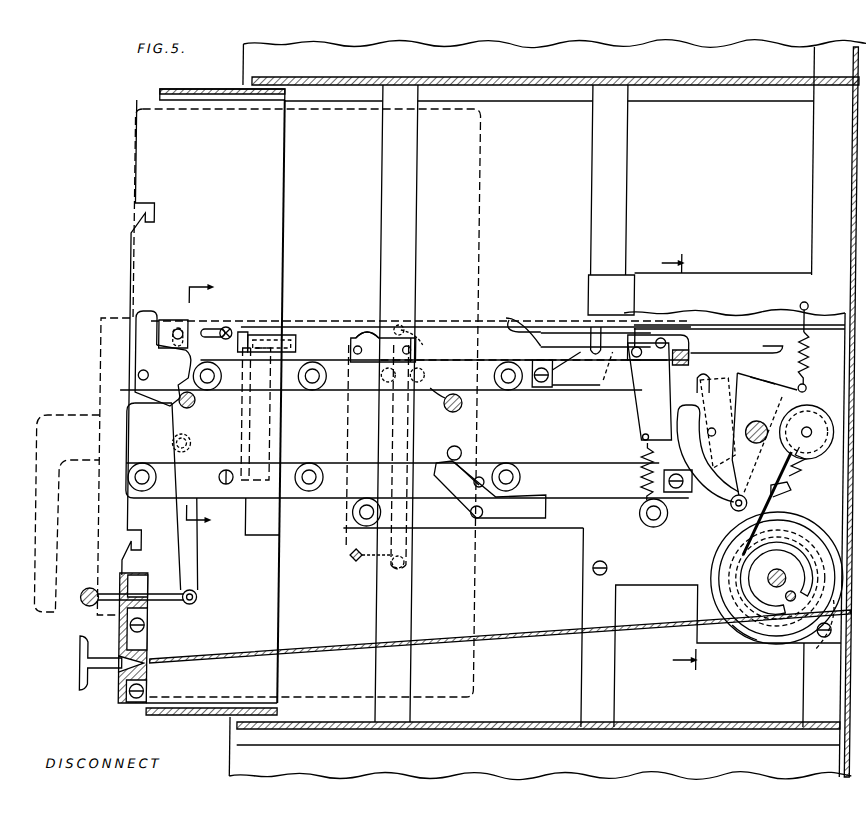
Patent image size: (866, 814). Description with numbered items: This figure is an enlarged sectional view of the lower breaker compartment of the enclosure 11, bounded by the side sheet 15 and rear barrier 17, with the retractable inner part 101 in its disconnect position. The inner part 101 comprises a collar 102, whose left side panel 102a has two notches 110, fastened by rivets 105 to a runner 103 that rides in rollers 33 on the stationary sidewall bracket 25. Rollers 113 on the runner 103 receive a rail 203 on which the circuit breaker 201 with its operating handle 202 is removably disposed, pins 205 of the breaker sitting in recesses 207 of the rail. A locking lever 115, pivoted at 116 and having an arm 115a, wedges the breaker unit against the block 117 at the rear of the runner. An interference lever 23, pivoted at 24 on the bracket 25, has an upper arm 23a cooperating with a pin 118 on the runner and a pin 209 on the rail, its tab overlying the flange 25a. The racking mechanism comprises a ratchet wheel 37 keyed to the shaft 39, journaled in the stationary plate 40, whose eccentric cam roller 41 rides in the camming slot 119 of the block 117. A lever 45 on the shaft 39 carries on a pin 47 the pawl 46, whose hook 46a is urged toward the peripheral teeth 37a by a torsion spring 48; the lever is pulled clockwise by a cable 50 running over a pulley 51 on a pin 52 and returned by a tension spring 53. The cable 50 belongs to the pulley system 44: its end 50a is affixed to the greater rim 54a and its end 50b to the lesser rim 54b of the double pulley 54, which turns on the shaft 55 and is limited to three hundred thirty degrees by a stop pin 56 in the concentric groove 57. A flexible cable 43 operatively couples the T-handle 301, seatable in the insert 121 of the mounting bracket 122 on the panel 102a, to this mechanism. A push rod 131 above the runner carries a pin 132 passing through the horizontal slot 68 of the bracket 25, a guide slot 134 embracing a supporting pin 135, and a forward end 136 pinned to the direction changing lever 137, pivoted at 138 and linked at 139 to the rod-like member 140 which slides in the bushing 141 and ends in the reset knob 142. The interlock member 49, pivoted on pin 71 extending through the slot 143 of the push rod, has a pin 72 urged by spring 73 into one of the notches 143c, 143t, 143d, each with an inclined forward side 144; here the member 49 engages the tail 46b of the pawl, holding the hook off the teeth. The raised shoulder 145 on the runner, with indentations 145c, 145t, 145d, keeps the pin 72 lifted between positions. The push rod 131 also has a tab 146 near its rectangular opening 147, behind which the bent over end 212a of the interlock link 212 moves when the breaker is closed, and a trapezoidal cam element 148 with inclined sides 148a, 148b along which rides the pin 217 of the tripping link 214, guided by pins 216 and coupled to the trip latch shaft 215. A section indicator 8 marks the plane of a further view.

The side sheet 15 is at (407, 48).
The rear barrier 17 is at (849, 148).
The collar 102 is at (210, 89).
The left side panel 102a is at (283, 165).
The circuit breaker 201 is at (131, 185).
The notches 110 is at (153, 208).
The retractable inner part 101 is at (215, 736).
The mounting bracket 122 is at (121, 630).
The bushing 141 is at (147, 590).
The insert 121 is at (148, 670).
The T-handle 301 is at (83, 662).
The reset knob 142 is at (92, 588).
The rod-like member 140 is at (166, 602).
The link connection 139 is at (200, 597).
The direction changing lever 137 is at (198, 548).
The operating handle 202 is at (40, 590).
The enclosure 11 is at (209, 404).
The bracket arm 115a is at (143, 310).
The locking lever 115 is at (160, 405).
The pivot 116 is at (138, 375).
The recesses 207 is at (170, 403).
The pins 205 is at (196, 403).
The pivot 138 is at (189, 437).
The rivets 105 is at (225, 470).
The runner 103 is at (266, 503).
The rail 203 is at (364, 466).
The rollers 113 is at (316, 388).
The rollers 33 is at (354, 514).
The interference lever 23 is at (548, 510).
The upper arm 23a is at (456, 483).
The pivot 24 is at (472, 514).
The pin 118 is at (482, 477).
The pin 209 is at (448, 452).
The interlock link 212 is at (270, 410).
The bent over upper end 212a is at (291, 345).
The tripping link 214 is at (393, 430).
The trip latch shaft 215 is at (353, 561).
The guide pins 216 is at (425, 376).
The pin 217 is at (426, 342).
The cam element 148 is at (369, 362).
The front side 148a is at (361, 329).
The rear side 148b is at (398, 325).
The push rod 131 is at (442, 322).
The slot 143 is at (556, 331).
The notch 143c is at (514, 322).
The forward side 144 is at (508, 335).
The notch 143t is at (593, 325).
The pin 72 is at (634, 346).
The notch 143d is at (660, 338).
The pin 71 is at (664, 336).
The pin 132 is at (689, 348).
The horizontal slot 68 is at (764, 348).
The tension spring 53 is at (810, 354).
The interlock member 49 is at (640, 410).
The biasing spring 73 is at (643, 485).
The block 117 is at (683, 495).
The tail 46b is at (677, 420).
The pawl 46 is at (720, 505).
The pin 47 is at (735, 512).
The camming slot 119 is at (697, 388).
The cam roller 41 is at (726, 410).
The lever 45 is at (753, 434).
The ratchet wheel 37 is at (789, 385).
The peripheral teeth 37a is at (770, 378).
The shaft 39 is at (762, 424).
The pulley 51 is at (820, 410).
The torsion spring 48 is at (760, 455).
The pin 52 is at (794, 456).
The cable 50 is at (840, 470).
The hook 46a is at (788, 488).
The system of pulleys 44 is at (822, 520).
The double pulley 54 is at (727, 596).
The cable end 50b is at (734, 556).
The lesser rim 54b is at (740, 568).
The concentric groove 57 is at (745, 582).
The shaft 55 is at (777, 590).
The stop pin 56 is at (793, 602).
The greater rim 54a is at (748, 632).
The cable end 50a is at (818, 650).
The flange 25a is at (501, 530).
The sidewall bracket 25 is at (625, 585).
The flexible cable 43 is at (502, 640).
The section line 8 is at (672, 462).
The stationary plate 40 is at (720, 283).
The guide slot 134 is at (208, 328).
The supporting pin 135 is at (228, 327).
The forward end 136 is at (175, 328).
The tab 146 is at (244, 332).
The rectangular opening 147 is at (288, 335).
The indentation 145t is at (553, 375).
The indentation 145c is at (553, 388).
The indentation 145d is at (604, 388).
The raised shoulder 145 is at (585, 405).